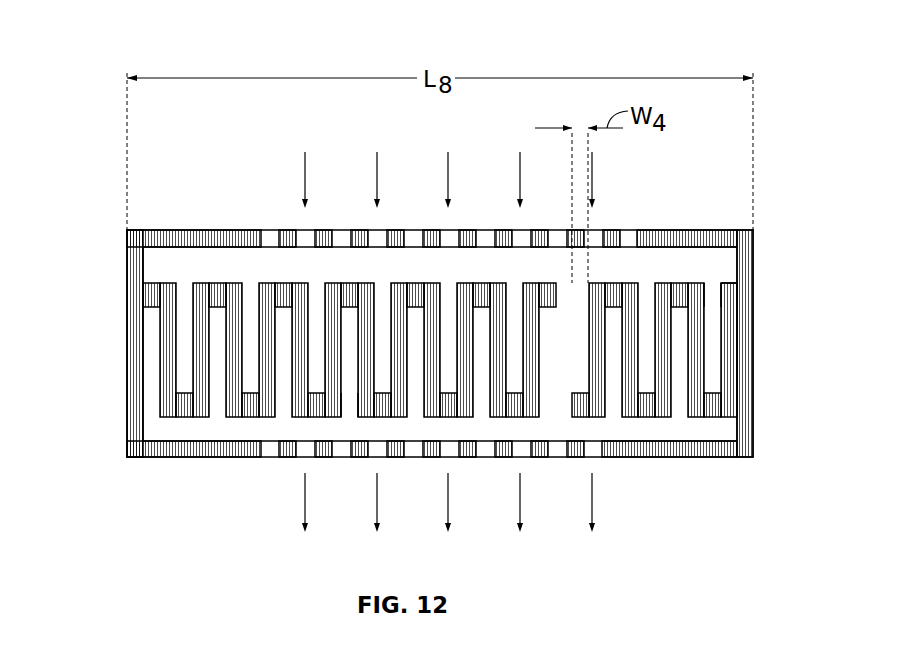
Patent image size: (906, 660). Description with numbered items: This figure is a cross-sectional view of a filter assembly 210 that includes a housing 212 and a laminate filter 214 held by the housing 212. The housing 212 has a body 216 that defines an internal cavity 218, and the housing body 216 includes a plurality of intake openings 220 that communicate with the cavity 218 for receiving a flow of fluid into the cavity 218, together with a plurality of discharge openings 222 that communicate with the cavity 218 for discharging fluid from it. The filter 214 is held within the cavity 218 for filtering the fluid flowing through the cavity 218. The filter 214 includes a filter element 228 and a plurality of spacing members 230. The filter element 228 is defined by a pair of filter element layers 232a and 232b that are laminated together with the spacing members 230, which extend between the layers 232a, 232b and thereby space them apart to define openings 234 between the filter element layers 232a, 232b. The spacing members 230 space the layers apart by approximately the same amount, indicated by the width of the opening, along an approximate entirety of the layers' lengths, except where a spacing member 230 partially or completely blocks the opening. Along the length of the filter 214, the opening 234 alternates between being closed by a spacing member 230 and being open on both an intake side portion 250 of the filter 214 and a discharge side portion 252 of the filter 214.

The filter assembly 210 is at (137, 57).
The housing 212 is at (754, 267).
The laminate filter 214 is at (640, 431).
The housing body 216 is at (762, 441).
The internal cavity 218 is at (729, 431).
The intake openings 220 is at (455, 237).
The discharge openings 222 is at (277, 446).
The filter element 228 is at (215, 262).
The spacing members 230 is at (350, 283).
The filter element layer 232a is at (728, 283).
The filter element layer 232b is at (693, 418).
The openings 234 is at (712, 278).
The intake side portion 250 is at (667, 265).
The discharge side portion 252 is at (608, 430).